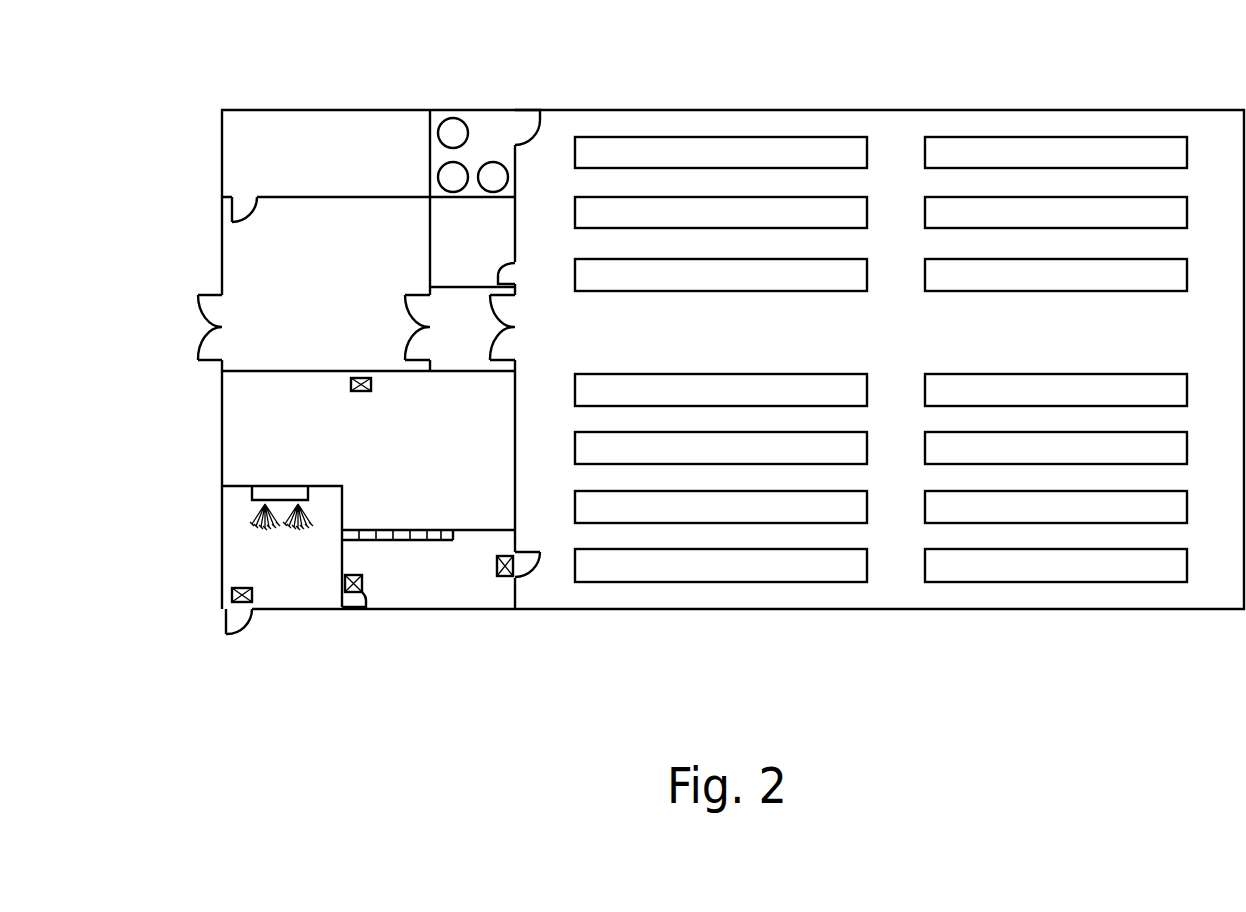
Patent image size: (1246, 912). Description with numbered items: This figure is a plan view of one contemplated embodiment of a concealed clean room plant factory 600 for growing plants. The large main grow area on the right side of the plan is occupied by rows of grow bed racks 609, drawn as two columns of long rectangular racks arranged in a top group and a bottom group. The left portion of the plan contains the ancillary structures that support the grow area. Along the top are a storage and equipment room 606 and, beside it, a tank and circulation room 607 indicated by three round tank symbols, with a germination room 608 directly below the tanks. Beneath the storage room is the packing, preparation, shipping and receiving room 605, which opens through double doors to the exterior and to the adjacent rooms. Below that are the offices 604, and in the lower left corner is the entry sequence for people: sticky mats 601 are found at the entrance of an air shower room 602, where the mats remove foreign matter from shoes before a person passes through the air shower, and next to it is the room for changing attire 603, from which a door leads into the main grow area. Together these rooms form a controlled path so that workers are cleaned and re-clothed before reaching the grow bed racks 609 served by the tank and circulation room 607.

The clean room for growing plants 600 is at (614, 662).
The sticky mats 601 is at (230, 596).
The air shower room 602 is at (282, 546).
The clothes change room 603 is at (441, 569).
The offices 604 is at (368, 417).
The packing, preparation, shipping and receiving room 605 is at (356, 408).
The storage and equipment room 606 is at (368, 202).
The tank and circulation room 607 is at (463, 113).
The germination room 608 is at (472, 220).
The grow bed racks 609 is at (881, 359).